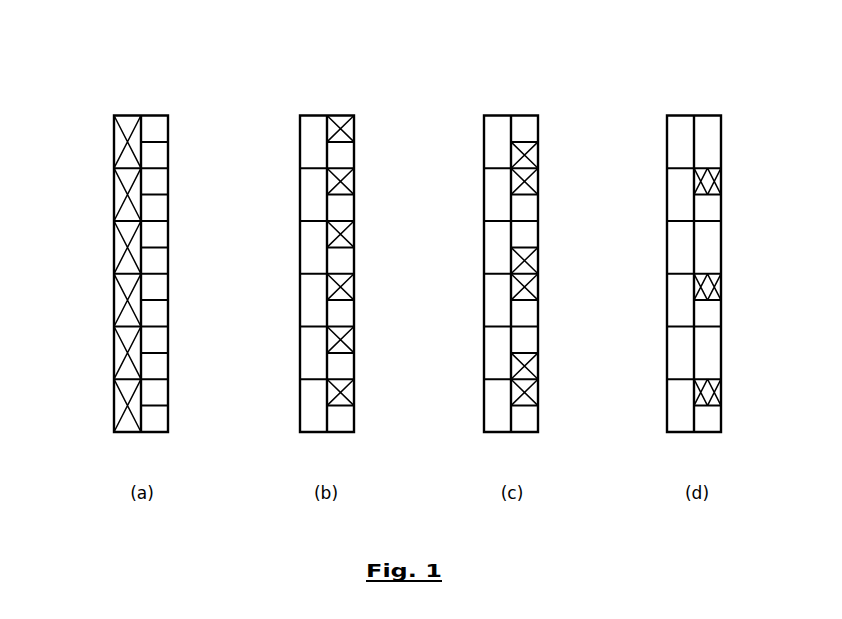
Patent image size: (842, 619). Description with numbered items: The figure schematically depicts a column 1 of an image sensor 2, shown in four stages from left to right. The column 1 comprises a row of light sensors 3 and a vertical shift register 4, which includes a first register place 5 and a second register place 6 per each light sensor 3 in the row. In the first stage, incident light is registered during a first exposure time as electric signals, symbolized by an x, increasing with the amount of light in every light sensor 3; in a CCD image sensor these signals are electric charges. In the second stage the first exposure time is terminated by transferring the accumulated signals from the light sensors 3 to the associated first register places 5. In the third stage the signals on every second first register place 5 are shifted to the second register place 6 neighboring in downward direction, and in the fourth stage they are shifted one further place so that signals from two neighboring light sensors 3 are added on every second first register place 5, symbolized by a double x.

The column 1 is at (130, 107).
The image sensor 2 is at (105, 106).
The light sensor 3 is at (666, 409).
The vertical shift register 4 is at (160, 106).
The first register place 5 is at (763, 384).
The second register place 6 is at (763, 409).